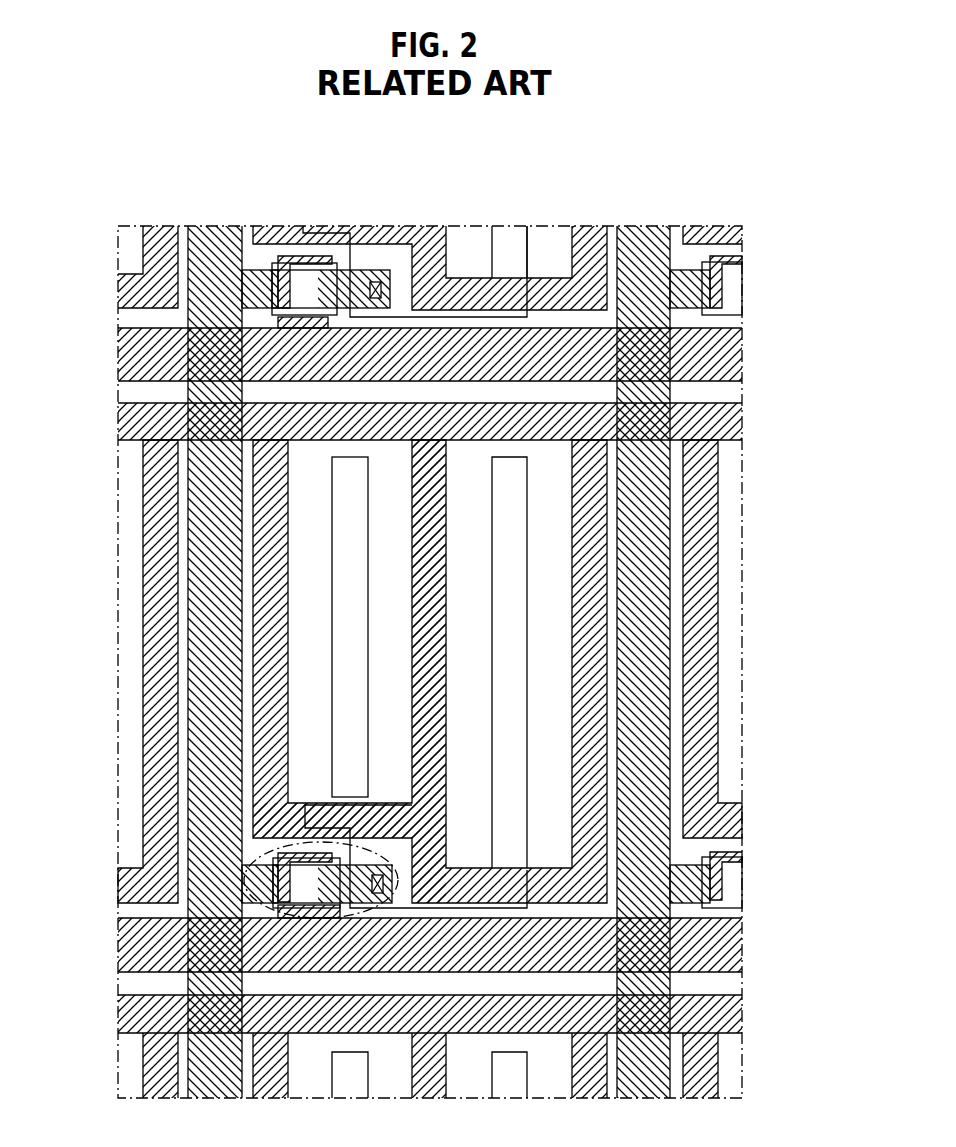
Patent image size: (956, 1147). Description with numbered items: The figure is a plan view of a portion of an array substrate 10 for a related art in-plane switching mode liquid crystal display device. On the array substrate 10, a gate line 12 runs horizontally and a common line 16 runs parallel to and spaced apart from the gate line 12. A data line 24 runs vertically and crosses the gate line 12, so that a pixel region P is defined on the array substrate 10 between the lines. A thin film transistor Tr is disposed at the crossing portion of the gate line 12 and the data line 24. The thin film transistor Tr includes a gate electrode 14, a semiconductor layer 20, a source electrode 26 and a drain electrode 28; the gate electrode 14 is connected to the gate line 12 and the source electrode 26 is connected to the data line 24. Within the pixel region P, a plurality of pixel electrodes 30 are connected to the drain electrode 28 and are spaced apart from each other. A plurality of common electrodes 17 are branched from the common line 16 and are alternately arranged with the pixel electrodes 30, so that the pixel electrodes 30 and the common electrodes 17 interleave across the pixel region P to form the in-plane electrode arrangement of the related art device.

The array substrate 10 is at (597, 197).
The gate line 12 is at (484, 973).
The gate electrode 14 is at (364, 812).
The common line 16 is at (738, 413).
The common electrodes 17 is at (441, 550).
The semiconductor layer 20 is at (303, 800).
The data line 24 is at (197, 666).
The source electrode 26 is at (250, 885).
The drain electrode 28 is at (347, 903).
The pixel electrodes 30 is at (516, 655).
The pixel region P is at (314, 560).
The thin film transistor Tr is at (320, 921).